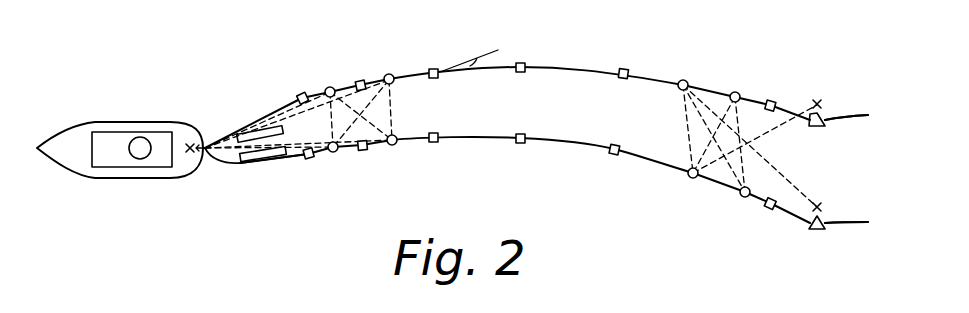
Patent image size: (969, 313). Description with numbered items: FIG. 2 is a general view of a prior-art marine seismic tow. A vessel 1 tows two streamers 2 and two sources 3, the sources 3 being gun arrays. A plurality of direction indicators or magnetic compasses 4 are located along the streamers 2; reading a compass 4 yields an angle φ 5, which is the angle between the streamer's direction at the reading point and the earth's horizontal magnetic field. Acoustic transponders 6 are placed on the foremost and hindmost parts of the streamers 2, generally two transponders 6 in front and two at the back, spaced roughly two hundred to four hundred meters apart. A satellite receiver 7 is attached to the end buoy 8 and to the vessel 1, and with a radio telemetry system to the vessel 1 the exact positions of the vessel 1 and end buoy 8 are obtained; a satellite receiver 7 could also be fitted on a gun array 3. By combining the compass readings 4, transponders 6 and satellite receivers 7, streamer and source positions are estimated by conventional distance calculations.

The vessel 1 is at (107, 128).
The streamer 2 is at (260, 112).
The source 3 is at (267, 152).
The magnetic compass 4 is at (360, 83).
The angle φ 5 is at (477, 63).
The acoustic transponder 6 is at (389, 74).
The satellite receiver 7 is at (818, 99).
The end buoy 8 is at (853, 168).